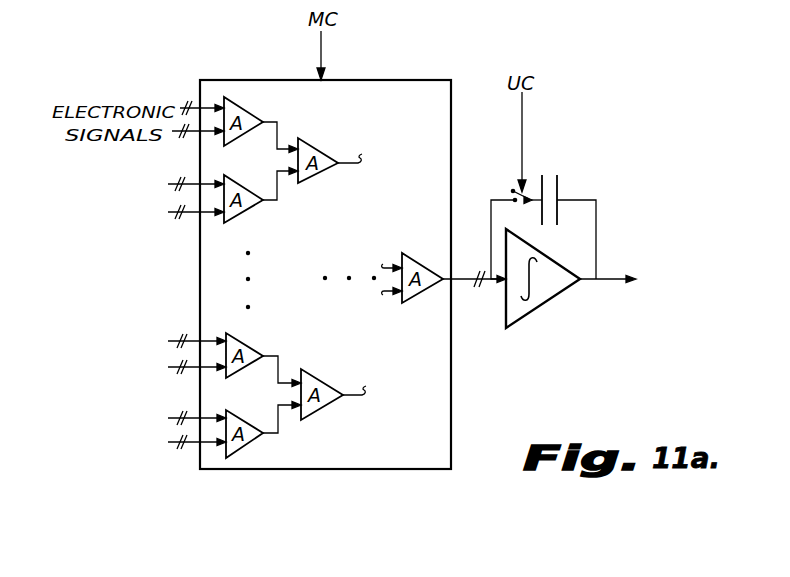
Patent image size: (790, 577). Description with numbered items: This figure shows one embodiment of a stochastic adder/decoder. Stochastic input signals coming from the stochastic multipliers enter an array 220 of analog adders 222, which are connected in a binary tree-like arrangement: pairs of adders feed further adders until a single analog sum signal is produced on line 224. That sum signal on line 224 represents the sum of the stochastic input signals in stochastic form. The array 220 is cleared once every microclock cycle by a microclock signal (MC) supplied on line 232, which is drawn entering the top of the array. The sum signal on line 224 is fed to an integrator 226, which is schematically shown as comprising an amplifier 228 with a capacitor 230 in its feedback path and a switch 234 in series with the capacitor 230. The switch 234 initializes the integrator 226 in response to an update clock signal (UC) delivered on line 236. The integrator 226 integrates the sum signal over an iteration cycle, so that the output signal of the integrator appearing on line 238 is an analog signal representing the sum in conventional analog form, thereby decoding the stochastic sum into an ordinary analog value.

The array 220 is at (212, 80).
The analog adder 222 is at (320, 147).
The line 224 is at (487, 289).
The integrator 226 is at (614, 204).
The amplifier 228 is at (552, 306).
The capacitor 230 is at (558, 190).
The line 232 is at (322, 52).
The switch 234 is at (502, 188).
The line 236 is at (523, 163).
The line 238 is at (608, 278).